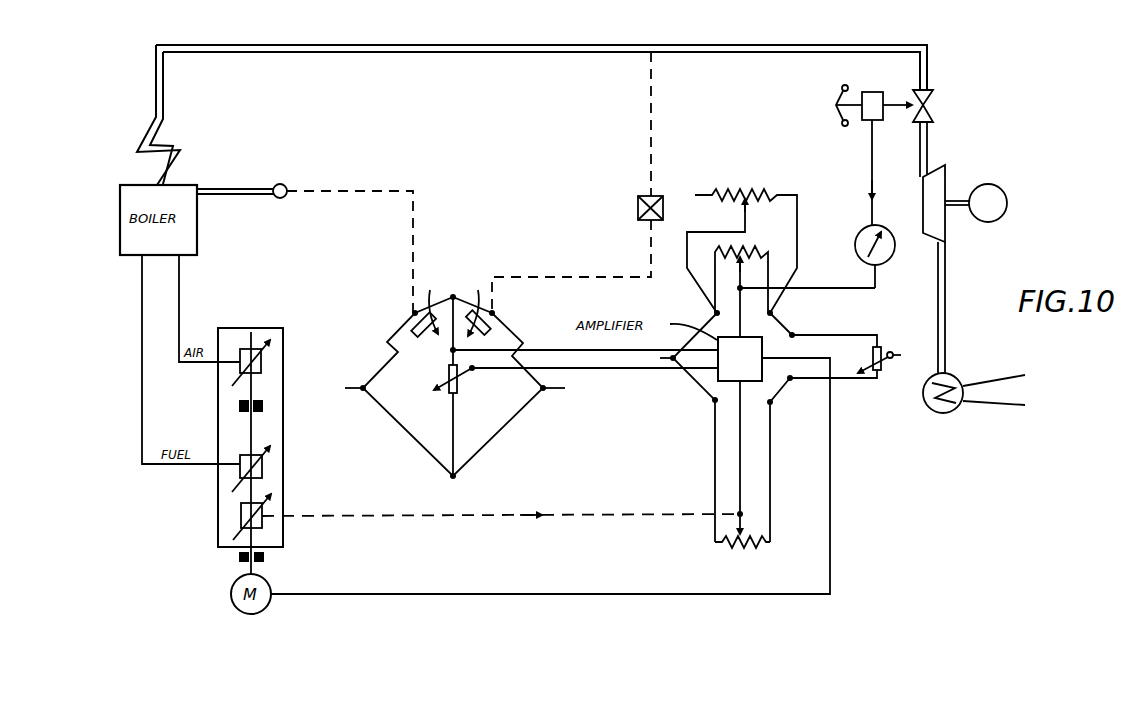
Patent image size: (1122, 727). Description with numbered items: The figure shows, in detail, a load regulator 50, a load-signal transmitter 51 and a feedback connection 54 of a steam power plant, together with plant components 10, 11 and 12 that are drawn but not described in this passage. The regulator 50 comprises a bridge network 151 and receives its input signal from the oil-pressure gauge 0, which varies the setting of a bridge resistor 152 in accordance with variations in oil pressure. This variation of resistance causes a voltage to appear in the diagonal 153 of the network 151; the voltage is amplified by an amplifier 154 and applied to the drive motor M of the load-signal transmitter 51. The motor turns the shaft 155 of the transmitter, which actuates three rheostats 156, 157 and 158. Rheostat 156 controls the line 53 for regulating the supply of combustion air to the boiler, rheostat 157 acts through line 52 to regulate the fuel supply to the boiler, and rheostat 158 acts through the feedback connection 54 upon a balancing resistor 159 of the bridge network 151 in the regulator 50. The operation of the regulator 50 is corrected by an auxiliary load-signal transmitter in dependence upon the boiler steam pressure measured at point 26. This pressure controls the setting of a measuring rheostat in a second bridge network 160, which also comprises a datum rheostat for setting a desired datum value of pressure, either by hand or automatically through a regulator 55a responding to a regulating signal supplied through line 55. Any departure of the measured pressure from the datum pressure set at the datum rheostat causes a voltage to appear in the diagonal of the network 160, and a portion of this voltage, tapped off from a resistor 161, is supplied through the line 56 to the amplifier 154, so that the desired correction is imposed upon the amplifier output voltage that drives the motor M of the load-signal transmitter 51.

The steam line 10 is at (160, 129).
The point 26 is at (282, 198).
The line 52 is at (140, 356).
The line 53 is at (180, 313).
The load-signal transmitter 51 is at (310, 437).
The shaft 155 is at (250, 427).
The rheostat 156 is at (262, 360).
The rheostat 157 is at (262, 466).
The rheostat 158 is at (262, 512).
The bridge network 160 is at (420, 387).
The resistor 161 is at (458, 388).
The line 56 is at (610, 352).
The feedback connection 54 is at (508, 515).
The line 55 is at (652, 132).
The regulator 55a is at (637, 208).
The bridge resistor 152 is at (752, 250).
The diagonal 153 is at (740, 302).
The load regulator 50 is at (782, 381).
The amplifier 154 is at (762, 350).
The bridge network 151 is at (793, 382).
The balancing resistor 159 is at (748, 548).
The throttle valve 12 is at (934, 98).
The turbine 11 is at (926, 203).
The oil-pressure gauge 0 is at (891, 258).